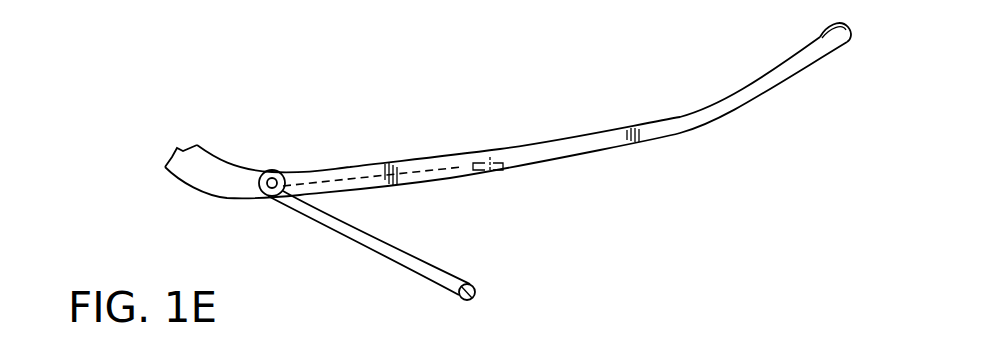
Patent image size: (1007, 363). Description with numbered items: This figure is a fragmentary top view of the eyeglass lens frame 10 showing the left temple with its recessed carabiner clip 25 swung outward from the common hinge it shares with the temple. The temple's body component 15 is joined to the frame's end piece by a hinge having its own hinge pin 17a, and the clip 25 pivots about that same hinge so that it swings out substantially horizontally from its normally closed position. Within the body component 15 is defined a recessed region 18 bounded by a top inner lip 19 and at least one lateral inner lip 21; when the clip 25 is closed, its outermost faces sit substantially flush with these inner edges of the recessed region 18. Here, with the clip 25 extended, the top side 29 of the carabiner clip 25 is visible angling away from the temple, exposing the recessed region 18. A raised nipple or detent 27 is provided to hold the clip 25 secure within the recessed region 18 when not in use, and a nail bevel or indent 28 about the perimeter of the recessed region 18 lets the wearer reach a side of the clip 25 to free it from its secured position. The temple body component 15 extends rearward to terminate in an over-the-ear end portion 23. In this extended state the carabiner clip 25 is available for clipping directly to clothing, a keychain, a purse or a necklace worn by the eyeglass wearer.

The lens frame 10 is at (222, 143).
The body component 15 is at (587, 136).
The hinge pin 17a is at (272, 178).
The recessed region 18 is at (375, 172).
The top inner lip 19 is at (415, 173).
The lateral inner lip 21 is at (472, 162).
The over-the-ear end portion 23 is at (823, 35).
The carabiner clip 25 is at (452, 258).
The raised nipple or detent 27 is at (458, 298).
The nail bevel or indent 28 is at (510, 167).
The top side 29 is at (370, 230).